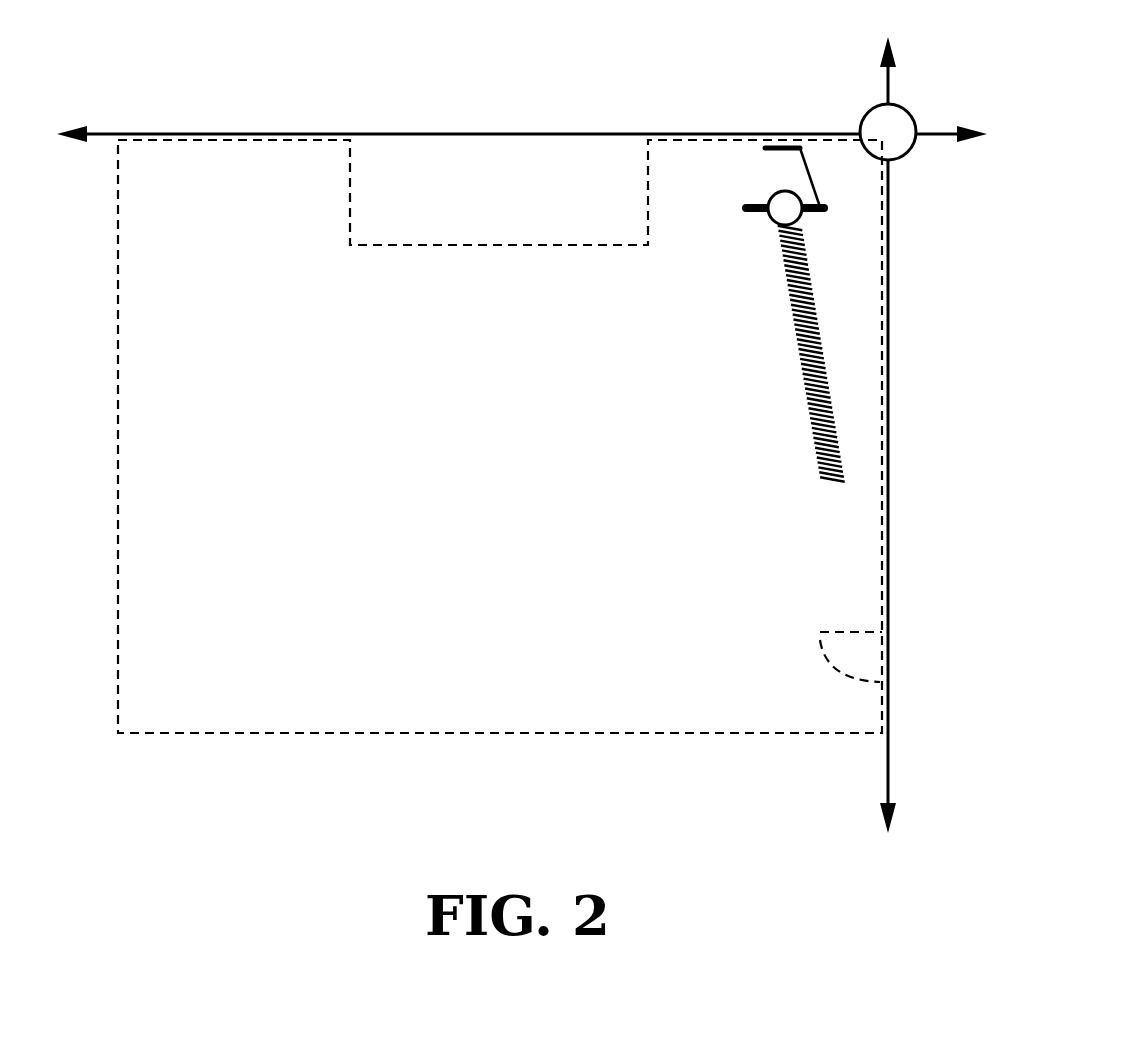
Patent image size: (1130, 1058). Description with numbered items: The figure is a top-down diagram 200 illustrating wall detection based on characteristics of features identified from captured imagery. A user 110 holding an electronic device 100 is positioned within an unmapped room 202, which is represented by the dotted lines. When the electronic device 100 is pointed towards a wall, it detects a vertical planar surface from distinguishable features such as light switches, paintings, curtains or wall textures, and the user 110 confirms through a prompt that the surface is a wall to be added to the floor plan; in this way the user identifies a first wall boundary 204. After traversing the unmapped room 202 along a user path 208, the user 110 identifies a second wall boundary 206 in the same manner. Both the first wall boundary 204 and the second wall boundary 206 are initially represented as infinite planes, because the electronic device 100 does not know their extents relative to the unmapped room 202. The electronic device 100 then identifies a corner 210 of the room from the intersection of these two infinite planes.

The diagram 200 is at (1083, 64).
The unmapped room 202 is at (118, 736).
The first wall boundary 204 is at (890, 755).
The second wall boundary 206 is at (96, 134).
The user path 208 is at (815, 463).
The corner 210 is at (905, 155).
The electronic device 100 is at (763, 153).
The user 110 is at (766, 225).